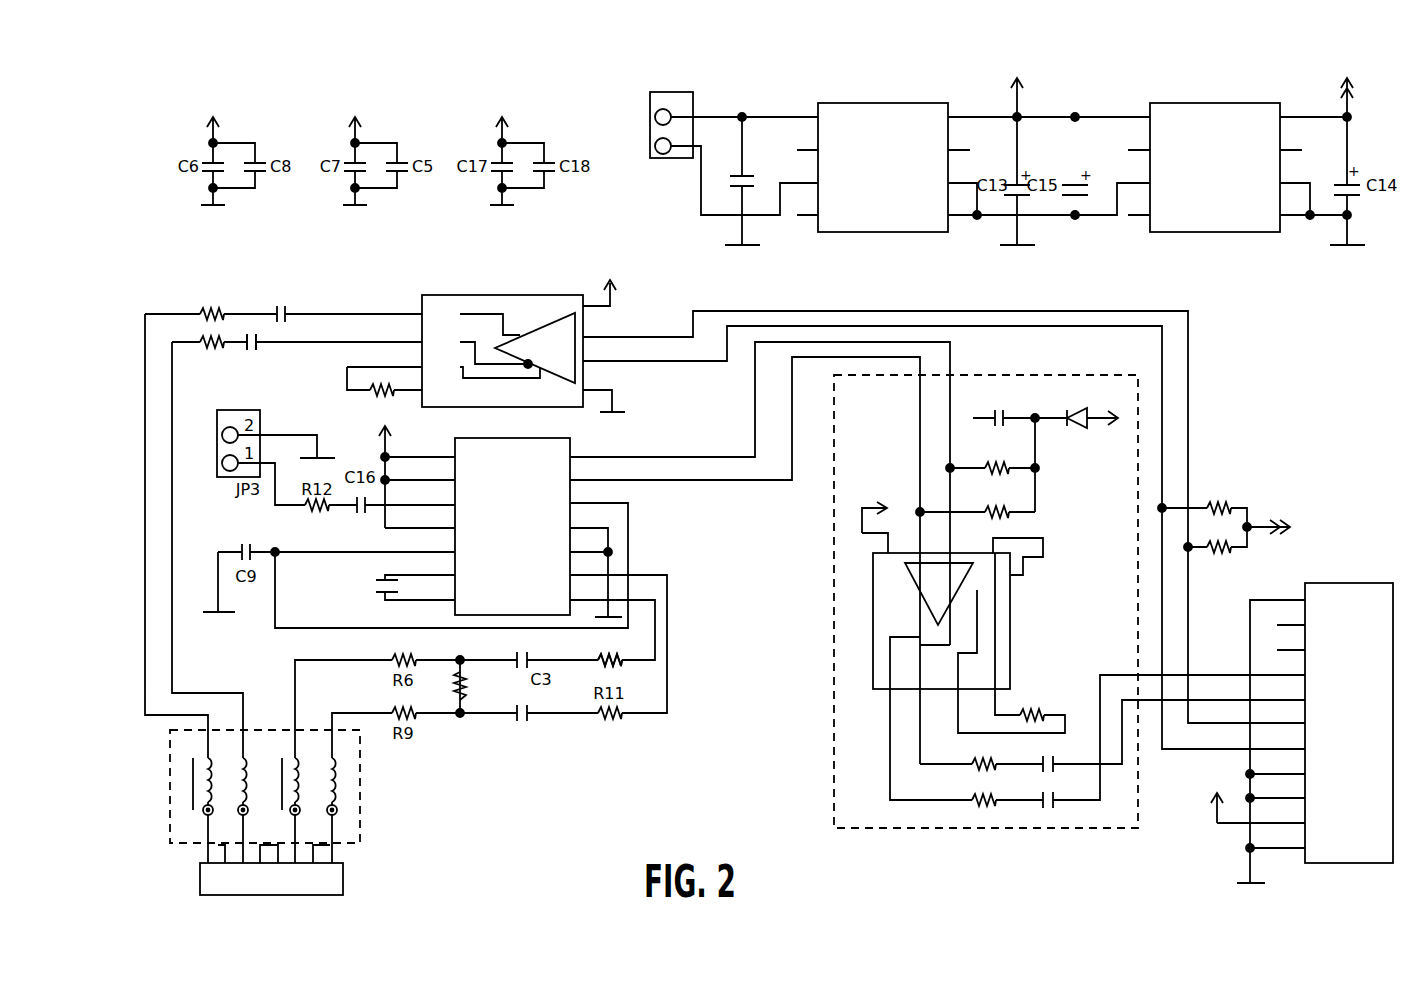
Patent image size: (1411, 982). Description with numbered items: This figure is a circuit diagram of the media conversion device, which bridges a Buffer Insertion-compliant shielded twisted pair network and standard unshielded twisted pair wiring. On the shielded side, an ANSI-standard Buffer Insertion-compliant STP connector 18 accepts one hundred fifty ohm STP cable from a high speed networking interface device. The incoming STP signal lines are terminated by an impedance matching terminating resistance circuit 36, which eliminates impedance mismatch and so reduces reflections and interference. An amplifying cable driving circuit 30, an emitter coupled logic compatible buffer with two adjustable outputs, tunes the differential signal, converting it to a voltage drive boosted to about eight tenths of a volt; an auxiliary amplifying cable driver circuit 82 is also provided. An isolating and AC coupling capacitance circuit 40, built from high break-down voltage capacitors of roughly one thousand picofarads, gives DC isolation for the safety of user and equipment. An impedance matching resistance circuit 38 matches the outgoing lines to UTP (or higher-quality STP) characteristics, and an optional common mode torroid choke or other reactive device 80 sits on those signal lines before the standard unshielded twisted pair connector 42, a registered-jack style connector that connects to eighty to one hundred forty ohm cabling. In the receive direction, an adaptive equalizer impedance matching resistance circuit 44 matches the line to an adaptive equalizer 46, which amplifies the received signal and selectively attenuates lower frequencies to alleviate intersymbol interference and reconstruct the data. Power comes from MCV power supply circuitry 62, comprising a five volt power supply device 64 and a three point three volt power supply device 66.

The Shielded Twisted Pair (STP) Connector 18 is at (1386, 583).
The Amplifying Cable Driving Circuit 30 is at (450, 295).
The Impedance Matching Terminating Resistance Circuit 36 is at (1273, 508).
The Impedance Matching Resistance Circuit 38 is at (191, 289).
The Isolating and AC Coupling Capacitance Circuit 40 is at (274, 380).
The Standard RJ-45 Unshielded Twisted Pair Connector 42 is at (414, 875).
The Adaptive Equalizer Impedance Matching Resistance Circuit 44 is at (619, 664).
The Adaptive Equalizer 46 is at (493, 615).
The MCV Power Supply Circuitry 62 is at (706, 107).
The 5 Volt Power Supply Device 64 is at (855, 103).
The 3.3 Volt Power Supply Device 66 is at (1175, 103).
The Common Mode Torroid Choke or other reactive device 80 is at (364, 797).
The Auxiliary Amplifying Cable Driver Circuit 82 is at (830, 730).